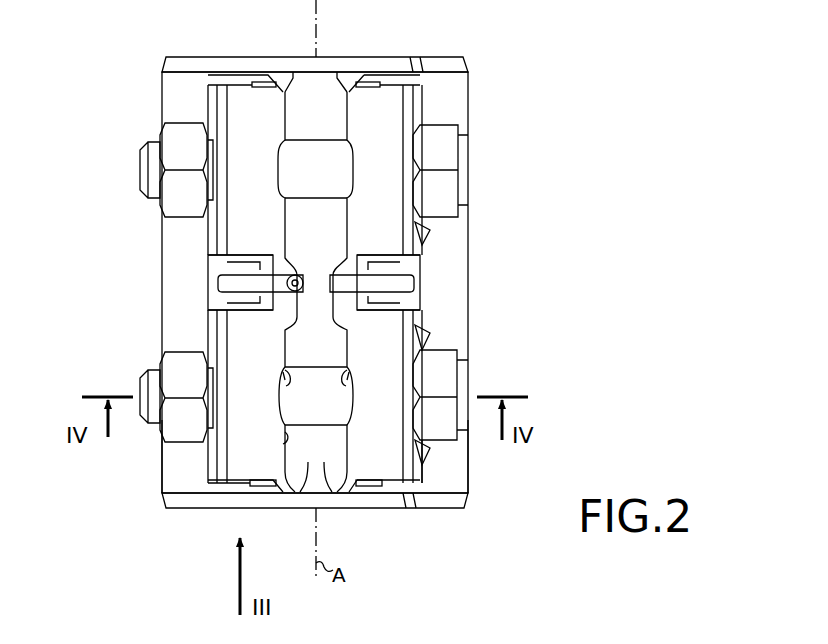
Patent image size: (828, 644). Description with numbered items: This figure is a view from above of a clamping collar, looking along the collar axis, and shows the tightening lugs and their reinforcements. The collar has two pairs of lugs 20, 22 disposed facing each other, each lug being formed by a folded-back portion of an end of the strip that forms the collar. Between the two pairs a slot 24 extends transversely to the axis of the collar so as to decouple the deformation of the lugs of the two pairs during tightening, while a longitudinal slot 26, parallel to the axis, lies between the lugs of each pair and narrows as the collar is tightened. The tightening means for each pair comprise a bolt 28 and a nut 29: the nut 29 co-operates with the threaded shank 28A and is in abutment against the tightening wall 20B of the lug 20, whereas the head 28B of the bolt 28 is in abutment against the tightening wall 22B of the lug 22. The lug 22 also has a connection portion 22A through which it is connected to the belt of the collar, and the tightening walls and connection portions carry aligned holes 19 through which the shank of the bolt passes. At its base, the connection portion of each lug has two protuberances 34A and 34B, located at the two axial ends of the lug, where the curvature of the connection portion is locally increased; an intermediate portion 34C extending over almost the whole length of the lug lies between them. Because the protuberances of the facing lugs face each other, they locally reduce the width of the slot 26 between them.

The holes 19 is at (283, 374).
The lug 20 is at (245, 108).
The tightening wall 20B is at (207, 467).
The lug 22 is at (368, 108).
The connection portion 22A is at (378, 466).
The tightening wall 22B is at (420, 472).
The slot 24 is at (412, 276).
The longitudinal slot 26 is at (312, 95).
The bolt 28 is at (316, 345).
The threaded shank 28A is at (157, 373).
The head 28B is at (450, 364).
The nut 29 is at (173, 428).
The protuberance 34A is at (284, 440).
The protuberance 34B is at (293, 302).
The intermediate portion 34C is at (286, 390).